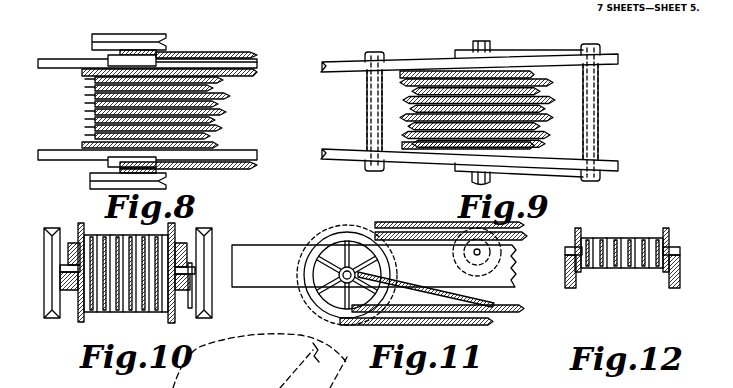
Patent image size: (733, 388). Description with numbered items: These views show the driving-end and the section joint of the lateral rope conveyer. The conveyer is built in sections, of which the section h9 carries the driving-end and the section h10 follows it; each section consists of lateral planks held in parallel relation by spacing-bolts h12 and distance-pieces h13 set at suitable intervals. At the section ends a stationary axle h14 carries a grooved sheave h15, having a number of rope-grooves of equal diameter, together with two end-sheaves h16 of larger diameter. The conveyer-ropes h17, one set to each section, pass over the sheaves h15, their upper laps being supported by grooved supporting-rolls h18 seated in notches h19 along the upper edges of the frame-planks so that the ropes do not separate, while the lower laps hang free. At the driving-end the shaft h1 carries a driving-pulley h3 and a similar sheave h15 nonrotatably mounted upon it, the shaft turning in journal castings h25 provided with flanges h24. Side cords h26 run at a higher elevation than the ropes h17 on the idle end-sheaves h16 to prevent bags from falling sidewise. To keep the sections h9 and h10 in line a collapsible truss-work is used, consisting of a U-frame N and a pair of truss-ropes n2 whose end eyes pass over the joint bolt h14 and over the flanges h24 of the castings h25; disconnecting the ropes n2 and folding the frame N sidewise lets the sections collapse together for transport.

In FIG. 8, the shaft h1 is at (132, 111).
In FIG. 10, the shaft h1 is at (190, 268).
In FIG. 11, the shaft h1 is at (339, 271).
In FIG. 8, the driving-pulley h3 is at (170, 43).
In FIG. 10, the driving-pulley h3 is at (50, 305).
In FIG. 11, the driving-pulley h3 is at (333, 305).
In FIG. 8, the section h9 is at (50, 149).
In FIG. 9, the section h9 is at (338, 153).
In FIG. 10, the section h9 is at (76, 238).
In FIG. 11, the section h9 is at (268, 250).
In FIG. 12, the section h9 is at (568, 278).
In FIG. 9, the section h10 is at (520, 57).
In FIG. 9, the spacing-bolts h12 is at (385, 48).
In FIG. 9, the distance-pieces h13 is at (369, 120).
In FIG. 9, the stationary axle h14 is at (488, 46).
In FIG. 8, the grooved sheave h15 is at (95, 88).
In FIG. 9, the grooved sheave h15 is at (553, 88).
In FIG. 10, the grooved sheave h15 is at (118, 312).
In FIG. 8, the end-sheaves h16 is at (97, 143).
In FIG. 9, the end-sheaves h16 is at (530, 77).
In FIG. 10, the end-sheaves h16 is at (80, 322).
In FIG. 11, the end-sheaves h16 is at (330, 233).
In FIG. 8, the conveyer-ropes h17 is at (215, 134).
In FIG. 9, the conveyer-ropes h17 is at (407, 100).
In FIG. 10, the conveyer-ropes h17 is at (156, 310).
In FIG. 11, the conveyer-ropes h17 is at (393, 234).
In FIG. 12, the conveyer-ropes h17 is at (588, 240).
In FIG. 11, the grooved supporting-rolls h18 is at (514, 239).
In FIG. 12, the grooved supporting-rolls h18 is at (633, 240).
In FIG. 11, the notches h19 is at (476, 254).
In FIG. 10, the flanges h24 is at (60, 280).
In FIG. 10, the journal castings h25 is at (68, 252).
In FIG. 8, the cords h26 is at (245, 72).
In FIG. 9, the cords h26 is at (403, 72).
In FIG. 10, the cords h26 is at (172, 322).
In FIG. 11, the cords h26 is at (390, 224).
In FIG. 12, the cords h26 is at (578, 227).
In FIG. 8, the truss-ropes n2 is at (227, 52).
In FIG. 10, the truss-ropes n2 is at (60, 322).
In FIG. 11, the truss-ropes n2 is at (493, 303).
In FIG. 9, the U-frame N is at (472, 49).